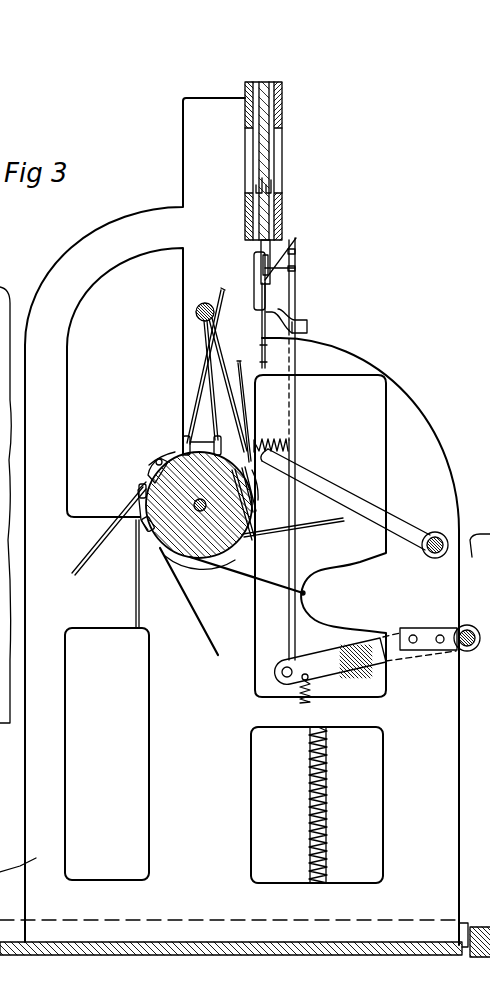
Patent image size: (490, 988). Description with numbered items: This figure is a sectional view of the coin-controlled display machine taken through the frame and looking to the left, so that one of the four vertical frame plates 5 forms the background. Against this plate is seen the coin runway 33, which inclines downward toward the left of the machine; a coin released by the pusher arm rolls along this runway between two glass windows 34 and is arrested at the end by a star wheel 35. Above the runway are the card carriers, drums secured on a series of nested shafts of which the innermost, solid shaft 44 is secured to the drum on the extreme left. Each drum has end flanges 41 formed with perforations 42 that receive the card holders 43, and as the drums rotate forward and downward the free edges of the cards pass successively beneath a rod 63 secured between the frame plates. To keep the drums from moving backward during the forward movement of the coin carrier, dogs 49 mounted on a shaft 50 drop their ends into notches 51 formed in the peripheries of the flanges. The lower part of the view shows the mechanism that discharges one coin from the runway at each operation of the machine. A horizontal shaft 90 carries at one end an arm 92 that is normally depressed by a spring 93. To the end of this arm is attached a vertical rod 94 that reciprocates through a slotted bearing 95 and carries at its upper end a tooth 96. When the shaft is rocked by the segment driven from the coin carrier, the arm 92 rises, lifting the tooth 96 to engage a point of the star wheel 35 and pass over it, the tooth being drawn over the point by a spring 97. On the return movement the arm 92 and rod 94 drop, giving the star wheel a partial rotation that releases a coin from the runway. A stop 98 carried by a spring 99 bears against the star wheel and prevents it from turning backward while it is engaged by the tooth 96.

The vertical frame plate 5 is at (135, 213).
The runway 33 is at (268, 190).
The glass windows 34 is at (278, 165).
The star wheel 35 is at (256, 188).
The flanges 41 is at (154, 463).
The perforations 42 is at (184, 440).
The card holders 43 is at (145, 475).
The innermost shaft 44 is at (166, 563).
The dogs 49 is at (335, 494).
The shaft 50 is at (430, 556).
The notches 51 is at (166, 450).
The rod 63 is at (199, 316).
The horizontal shaft 90 is at (470, 652).
The arm 92 is at (333, 672).
The spring 93 is at (309, 812).
The vertical rod 94 is at (296, 548).
The slotted bearing 95 is at (307, 324).
The tooth 96 is at (290, 270).
The spring 97 is at (262, 438).
The stop 98 is at (262, 279).
The spring 99 is at (262, 338).